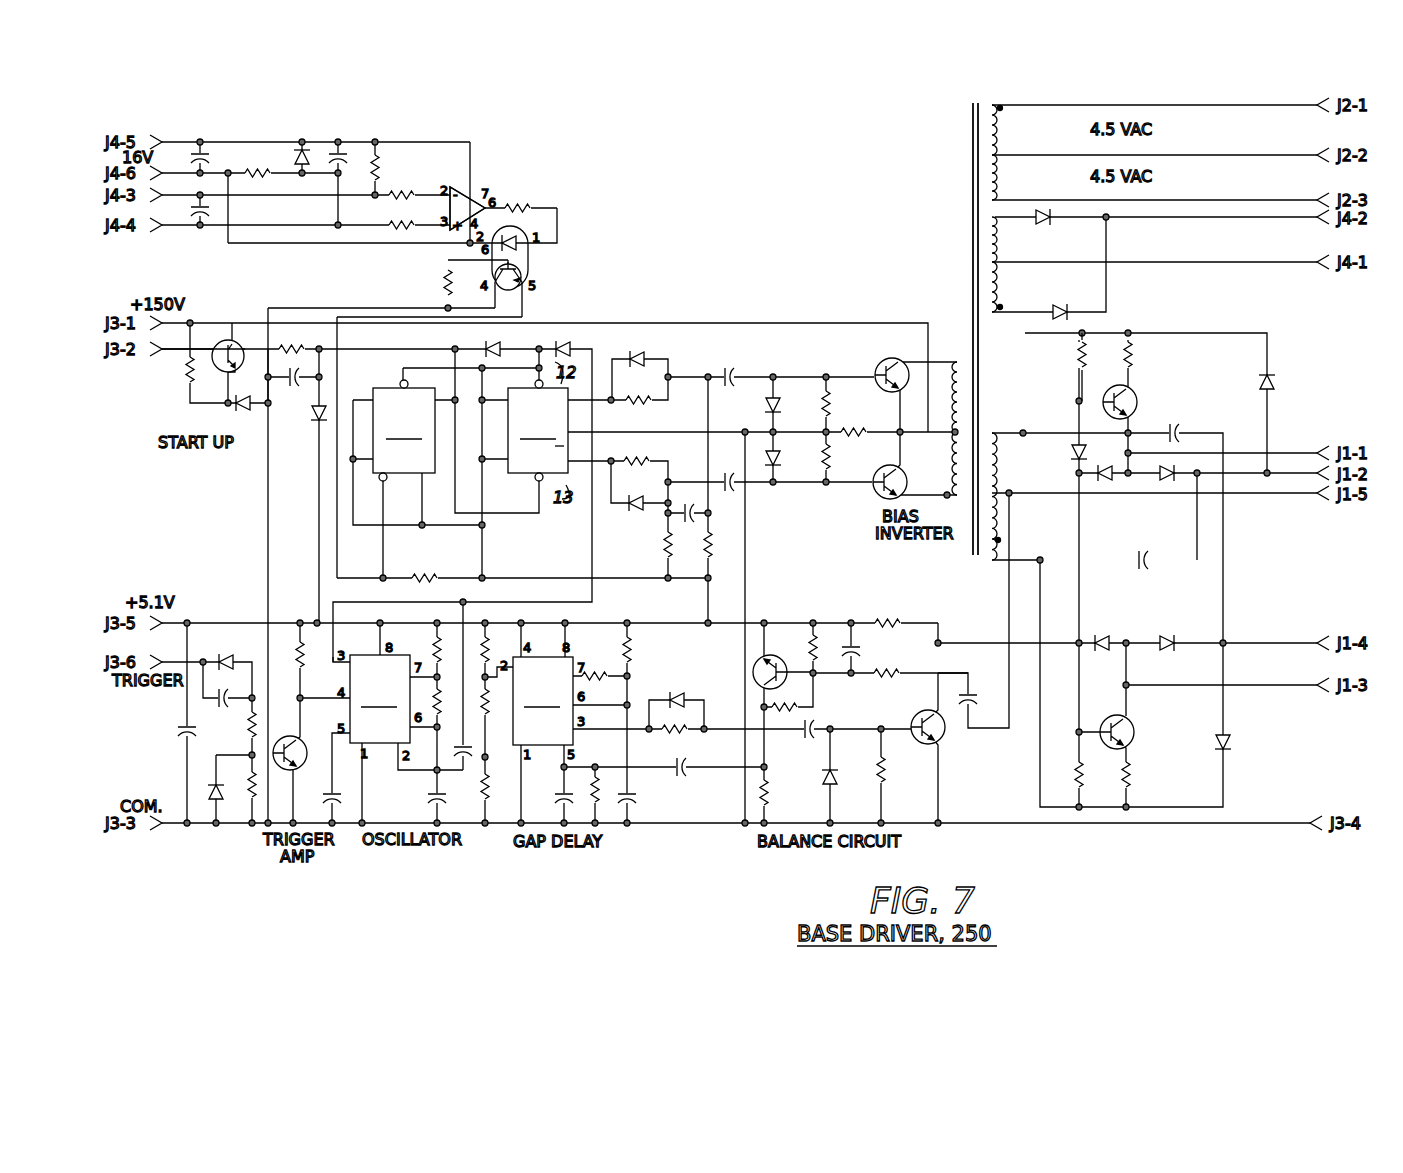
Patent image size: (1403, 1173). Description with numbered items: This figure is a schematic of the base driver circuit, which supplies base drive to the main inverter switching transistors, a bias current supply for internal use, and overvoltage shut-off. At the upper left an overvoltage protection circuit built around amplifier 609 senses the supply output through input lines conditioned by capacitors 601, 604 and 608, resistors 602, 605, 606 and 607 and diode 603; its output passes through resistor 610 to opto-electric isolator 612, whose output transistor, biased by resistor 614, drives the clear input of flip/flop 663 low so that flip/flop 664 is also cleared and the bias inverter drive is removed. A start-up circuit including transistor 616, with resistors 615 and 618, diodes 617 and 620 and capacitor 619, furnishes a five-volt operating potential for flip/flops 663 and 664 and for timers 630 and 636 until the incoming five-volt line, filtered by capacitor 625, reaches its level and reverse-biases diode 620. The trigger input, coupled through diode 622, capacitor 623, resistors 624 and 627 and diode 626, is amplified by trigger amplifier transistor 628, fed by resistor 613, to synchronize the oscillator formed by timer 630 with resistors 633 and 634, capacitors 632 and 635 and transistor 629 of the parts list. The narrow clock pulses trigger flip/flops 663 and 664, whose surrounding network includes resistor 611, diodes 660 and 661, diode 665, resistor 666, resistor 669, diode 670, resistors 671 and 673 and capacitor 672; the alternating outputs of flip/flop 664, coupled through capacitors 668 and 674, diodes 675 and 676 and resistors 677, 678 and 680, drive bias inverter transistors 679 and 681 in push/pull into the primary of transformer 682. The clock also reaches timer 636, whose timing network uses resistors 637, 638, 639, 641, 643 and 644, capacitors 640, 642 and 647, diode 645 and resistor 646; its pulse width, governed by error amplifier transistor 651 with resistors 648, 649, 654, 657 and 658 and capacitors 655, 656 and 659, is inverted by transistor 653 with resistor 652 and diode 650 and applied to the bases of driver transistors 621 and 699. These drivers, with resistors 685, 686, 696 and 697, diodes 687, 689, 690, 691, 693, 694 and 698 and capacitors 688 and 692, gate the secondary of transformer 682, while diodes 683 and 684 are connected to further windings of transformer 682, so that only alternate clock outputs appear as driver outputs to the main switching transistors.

The capacitor 601 is at (204, 146).
The resistor 602 is at (253, 161).
The diode 603 is at (298, 147).
The capacitor 604 is at (335, 151).
The resistor 605 is at (379, 159).
The resistor 606 is at (404, 182).
The resistor 607 is at (402, 213).
The capacitor 608 is at (205, 218).
The amplifier 609 is at (463, 194).
The resistor 610 is at (520, 204).
The resistor 611 is at (425, 576).
The opto-electric isolator 612 is at (530, 265).
The resistor 613 is at (293, 632).
The resistor 614 is at (444, 278).
The resistor 615 is at (188, 380).
The transistor 616 is at (232, 338).
The diode 617 is at (243, 410).
The resistor 618 is at (291, 343).
The capacitor 619 is at (294, 384).
The diode 620 is at (310, 414).
The transistor 621 is at (1112, 388).
The diode 622 is at (224, 657).
The capacitor 623 is at (216, 694).
The resistor 624 is at (246, 720).
The capacitor 625 is at (180, 731).
The diode 626 is at (203, 783).
The resistor 627 is at (246, 760).
The trigger amplifier transistor 628 is at (297, 762).
The transistor 629 is at (344, 797).
The timer 630 is at (380, 699).
The capacitor 632 is at (430, 800).
The resistor 633 is at (430, 626).
The resistor 634 is at (433, 684).
The capacitor 635 is at (458, 758).
The timer 636 is at (543, 701).
The resistor 637 is at (492, 636).
The resistor 638 is at (502, 677).
The resistor 639 is at (480, 798).
The capacitor 640 is at (556, 798).
The resistor 641 is at (593, 800).
The capacitor 642 is at (638, 799).
The resistor 643 is at (594, 674).
The resistor 644 is at (630, 648).
The diode 645 is at (677, 692).
The resistor 646 is at (682, 735).
The capacitor 647 is at (684, 774).
The resistor 648 is at (765, 798).
The resistor 649 is at (793, 698).
The diode 650 is at (823, 775).
The transistor 651 is at (754, 665).
The resistor 652 is at (880, 765).
The transistor 653 is at (920, 715).
The resistor 654 is at (810, 650).
The capacitor 655 is at (812, 727).
The capacitor 656 is at (846, 640).
The resistor 657 is at (890, 621).
The resistor 658 is at (888, 670).
The capacitor 659 is at (972, 688).
The diode 660 is at (486, 344).
The diode 661 is at (567, 345).
The flip/flop 663 is at (404, 430).
The flip/flop 664 is at (538, 430).
The diode 665 is at (640, 344).
The resistor 666 is at (641, 391).
The capacitor 668 is at (728, 369).
The resistor 669 is at (643, 453).
The diode 670 is at (639, 494).
The resistor 671 is at (665, 547).
The capacitor 672 is at (686, 505).
The resistor 673 is at (725, 545).
The capacitor 674 is at (727, 473).
The diode 675 is at (764, 406).
The diode 676 is at (780, 459).
The resistor 677 is at (832, 438).
The resistor 678 is at (823, 393).
The transistor 679 is at (881, 366).
The resistor 680 is at (854, 427).
The transistor 681 is at (898, 478).
The transformer 682 is at (970, 110).
The diode 683 is at (1045, 223).
The diode 684 is at (1060, 310).
The resistor 685 is at (1076, 352).
The resistor 686 is at (1132, 350).
The diode 687 is at (1270, 378).
The capacitor 688 is at (1170, 425).
The diode 689 is at (1070, 455).
The diode 690 is at (1102, 463).
The diode 691 is at (1158, 478).
The capacitor 692 is at (1144, 555).
The diode 693 is at (1095, 635).
The diode 694 is at (1170, 635).
The resistor 696 is at (1080, 775).
The resistor 697 is at (1130, 761).
The diode 698 is at (1229, 744).
The transistor 699 is at (1136, 732).